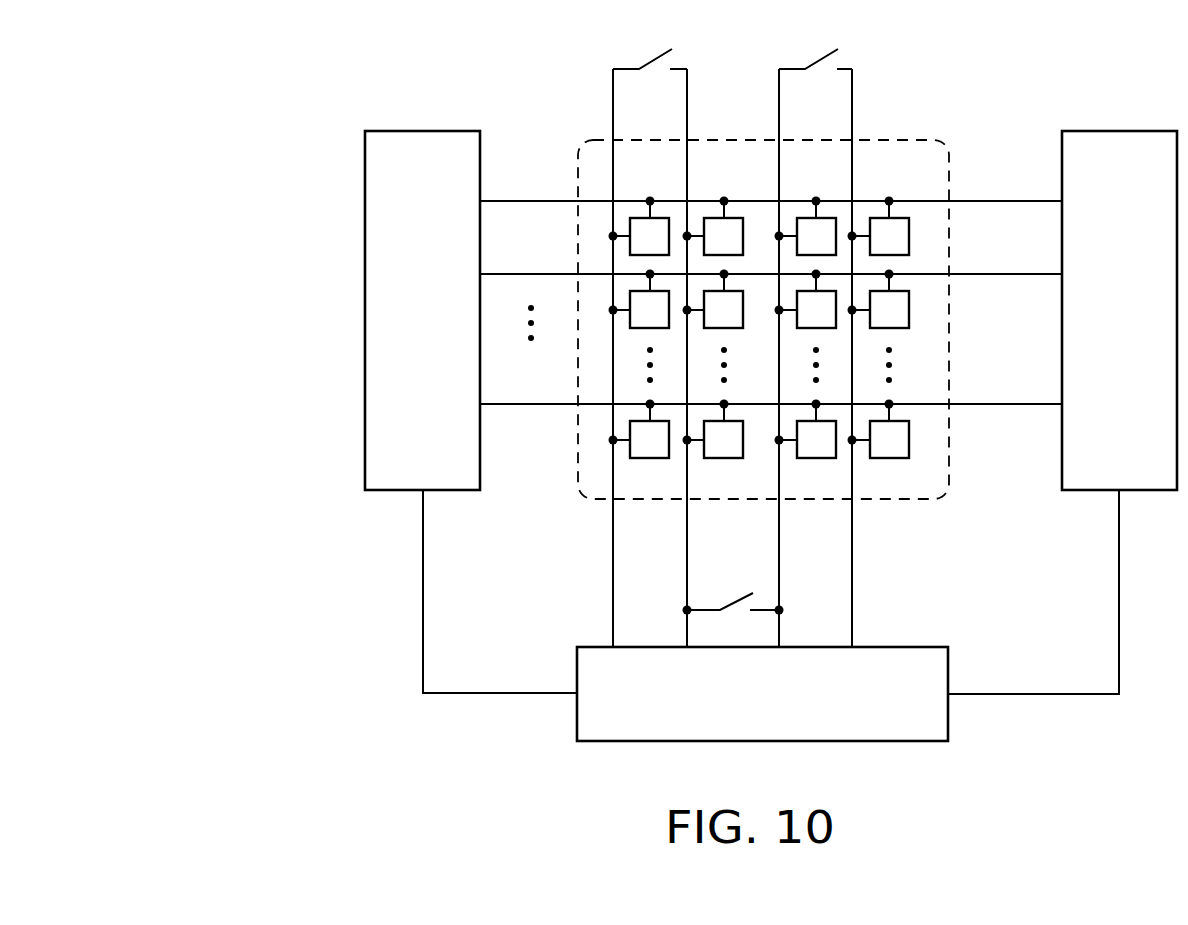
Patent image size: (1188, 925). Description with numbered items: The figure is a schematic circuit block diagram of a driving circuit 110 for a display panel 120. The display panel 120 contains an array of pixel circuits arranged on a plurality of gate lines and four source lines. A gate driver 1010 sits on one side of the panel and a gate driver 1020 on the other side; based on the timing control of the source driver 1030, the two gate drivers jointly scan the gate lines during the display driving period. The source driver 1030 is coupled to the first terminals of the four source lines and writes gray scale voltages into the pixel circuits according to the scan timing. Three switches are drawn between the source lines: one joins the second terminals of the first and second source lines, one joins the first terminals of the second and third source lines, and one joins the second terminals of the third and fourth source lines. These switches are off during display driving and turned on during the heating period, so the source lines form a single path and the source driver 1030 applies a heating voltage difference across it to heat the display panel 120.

The driving circuit 110 is at (143, 448).
The display panel 120 is at (578, 140).
The gate driver 1010 is at (422, 131).
The gate driver 1020 is at (1118, 131).
The source driver 1030 is at (861, 741).